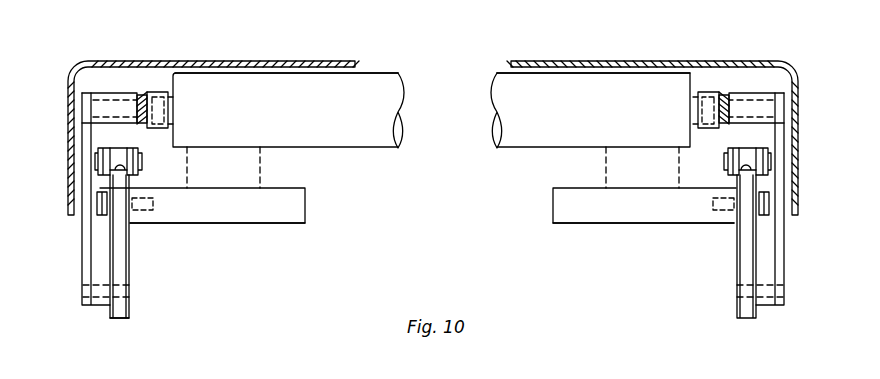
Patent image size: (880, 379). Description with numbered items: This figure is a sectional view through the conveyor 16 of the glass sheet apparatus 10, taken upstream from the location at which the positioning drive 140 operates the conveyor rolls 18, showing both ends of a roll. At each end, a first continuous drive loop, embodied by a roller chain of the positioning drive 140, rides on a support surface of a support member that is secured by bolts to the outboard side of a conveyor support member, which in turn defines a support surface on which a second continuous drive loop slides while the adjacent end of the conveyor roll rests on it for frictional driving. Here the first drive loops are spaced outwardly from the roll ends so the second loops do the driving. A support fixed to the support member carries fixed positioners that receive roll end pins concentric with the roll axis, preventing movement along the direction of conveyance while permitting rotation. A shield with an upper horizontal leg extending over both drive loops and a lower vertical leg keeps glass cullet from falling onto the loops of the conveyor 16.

The apparatus 10 is at (576, 42).
The conveyor 16 is at (393, 48).
The conveyor rolls 18 is at (498, 73).
The positioning drive 140 is at (121, 329).